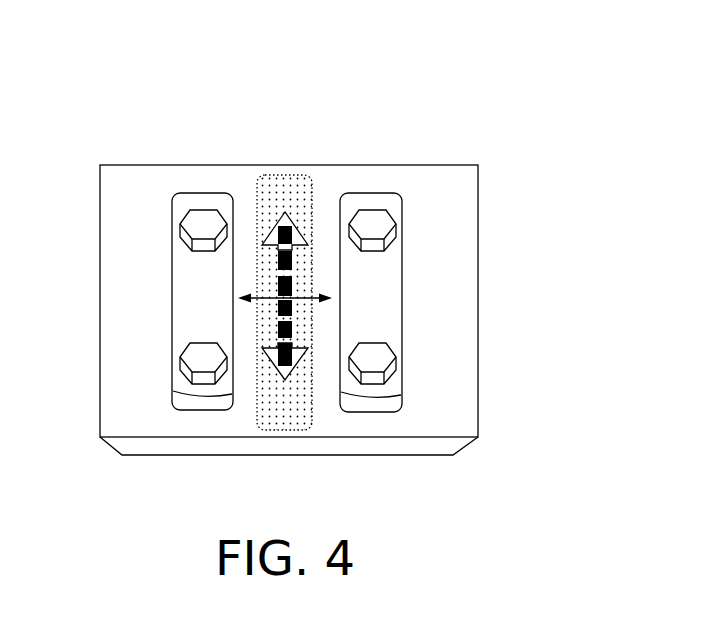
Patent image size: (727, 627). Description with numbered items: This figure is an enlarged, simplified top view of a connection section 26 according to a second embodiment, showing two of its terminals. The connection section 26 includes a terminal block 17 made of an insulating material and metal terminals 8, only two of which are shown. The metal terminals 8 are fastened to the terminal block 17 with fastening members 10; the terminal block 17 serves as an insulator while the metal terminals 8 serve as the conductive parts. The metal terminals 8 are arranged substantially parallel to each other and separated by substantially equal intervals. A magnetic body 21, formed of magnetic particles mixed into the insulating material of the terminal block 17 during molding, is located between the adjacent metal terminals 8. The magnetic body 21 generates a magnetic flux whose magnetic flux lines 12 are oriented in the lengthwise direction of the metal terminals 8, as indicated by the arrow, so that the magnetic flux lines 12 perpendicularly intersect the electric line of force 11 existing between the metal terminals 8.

The connection section 26 is at (292, 253).
The terminal block 17 is at (463, 173).
The metal terminal 8 is at (178, 184).
The fastening member 10 is at (200, 233).
The electric line of force 11 is at (253, 297).
The magnetic body 21 is at (288, 175).
The magnetic flux lines 12 is at (264, 327).